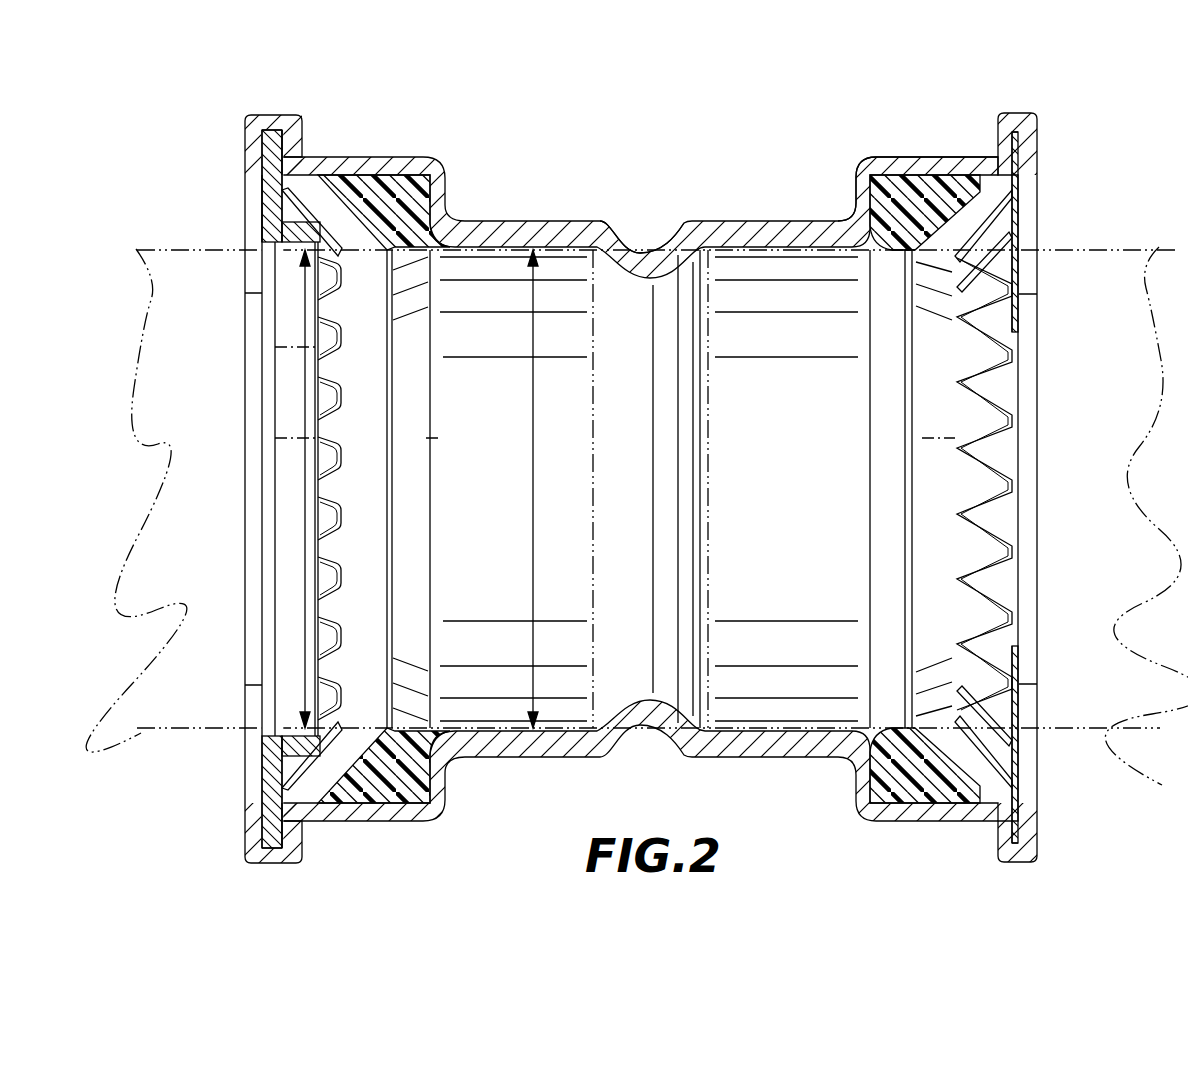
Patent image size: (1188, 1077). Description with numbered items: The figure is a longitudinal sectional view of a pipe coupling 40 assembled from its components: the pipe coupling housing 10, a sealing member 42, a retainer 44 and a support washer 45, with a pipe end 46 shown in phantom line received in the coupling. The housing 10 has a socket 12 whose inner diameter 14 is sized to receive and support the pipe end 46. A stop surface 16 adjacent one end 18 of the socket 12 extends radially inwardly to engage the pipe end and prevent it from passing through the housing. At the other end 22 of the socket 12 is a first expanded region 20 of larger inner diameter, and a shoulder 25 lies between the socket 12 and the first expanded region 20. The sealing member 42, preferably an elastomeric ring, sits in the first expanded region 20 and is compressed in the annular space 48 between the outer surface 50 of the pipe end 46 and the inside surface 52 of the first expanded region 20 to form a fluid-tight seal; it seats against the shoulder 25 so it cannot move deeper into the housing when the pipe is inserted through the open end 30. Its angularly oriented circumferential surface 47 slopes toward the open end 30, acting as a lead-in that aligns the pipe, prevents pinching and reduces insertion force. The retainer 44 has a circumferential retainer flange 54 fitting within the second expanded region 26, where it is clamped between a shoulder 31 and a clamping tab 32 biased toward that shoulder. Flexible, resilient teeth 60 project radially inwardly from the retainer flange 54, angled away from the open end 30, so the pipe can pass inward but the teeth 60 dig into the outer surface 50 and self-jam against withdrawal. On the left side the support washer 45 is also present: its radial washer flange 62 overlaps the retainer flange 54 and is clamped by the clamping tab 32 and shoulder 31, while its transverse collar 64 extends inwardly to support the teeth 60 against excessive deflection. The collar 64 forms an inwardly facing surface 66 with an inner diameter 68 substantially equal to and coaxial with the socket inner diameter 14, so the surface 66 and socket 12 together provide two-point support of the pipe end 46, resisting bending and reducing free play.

The pipe coupling housing 10 is at (562, 219).
The socket 12 is at (504, 430).
The socket inner diameter 14 is at (528, 487).
The stop surface 16 is at (688, 636).
The one end of the socket 18 is at (700, 220).
The first expanded region 20 is at (932, 155).
The other end of the socket 22 is at (843, 218).
The shoulder 25 is at (890, 243).
The second expanded region 26 is at (1013, 115).
The open end 30 is at (1040, 476).
The shoulder 31 is at (285, 142).
The clamping tab 32 is at (245, 157).
The pipe coupling 40 is at (736, 134).
The sealing member 42 is at (418, 183).
The retainer 44 is at (298, 200).
The support washer 45 is at (268, 200).
The pipe end 46 is at (190, 706).
The angularly oriented circumferential surface 47 is at (945, 326).
The annular space 48 is at (953, 730).
The outer surface of pipe end 50 is at (1073, 728).
The inside surface of the first expanded region 52 is at (915, 782).
The retainer flange 54 is at (303, 827).
The teeth 60 is at (985, 520).
The washer flange 62 is at (268, 772).
The collar 64 is at (303, 247).
The inwardly facing surface 66 is at (290, 317).
The inner diameter of collar surface 68 is at (305, 482).